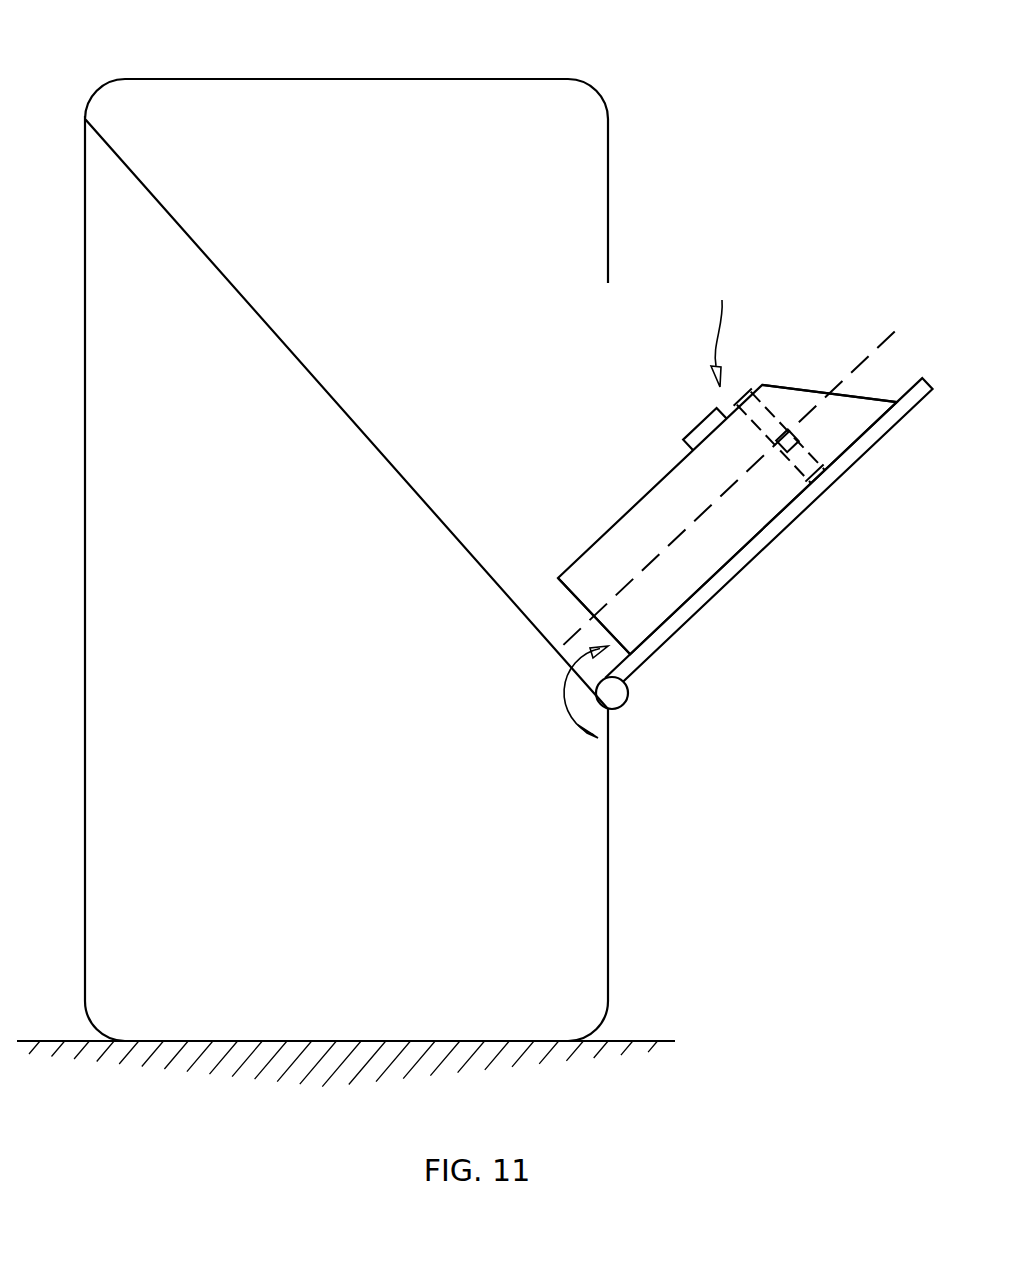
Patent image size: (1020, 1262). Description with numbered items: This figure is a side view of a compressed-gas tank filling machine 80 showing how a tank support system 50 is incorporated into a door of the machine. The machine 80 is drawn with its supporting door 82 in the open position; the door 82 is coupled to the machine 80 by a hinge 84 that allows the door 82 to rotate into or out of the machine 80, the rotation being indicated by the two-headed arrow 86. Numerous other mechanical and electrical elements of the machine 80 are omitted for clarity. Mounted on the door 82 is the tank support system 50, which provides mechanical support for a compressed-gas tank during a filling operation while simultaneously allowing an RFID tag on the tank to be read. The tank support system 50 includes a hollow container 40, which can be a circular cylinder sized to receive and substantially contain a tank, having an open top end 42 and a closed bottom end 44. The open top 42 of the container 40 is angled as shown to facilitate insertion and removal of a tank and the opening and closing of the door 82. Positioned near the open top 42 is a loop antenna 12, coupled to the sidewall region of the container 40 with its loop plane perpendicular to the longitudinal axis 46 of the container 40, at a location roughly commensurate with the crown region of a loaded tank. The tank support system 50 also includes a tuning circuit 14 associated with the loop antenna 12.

The compressed-gas tank filling machine 80 is at (533, 79).
The hollow container 40 is at (652, 515).
The open top end 42 is at (803, 389).
The closed bottom end 44 is at (570, 592).
The longitudinal axis 46 is at (558, 642).
The loop antenna 12 is at (758, 422).
The tuning circuit 14 is at (703, 422).
The door 82 is at (720, 580).
The hinge 84 is at (614, 693).
The two-headed arrow 86 is at (568, 712).
The tank support system 50 is at (722, 330).